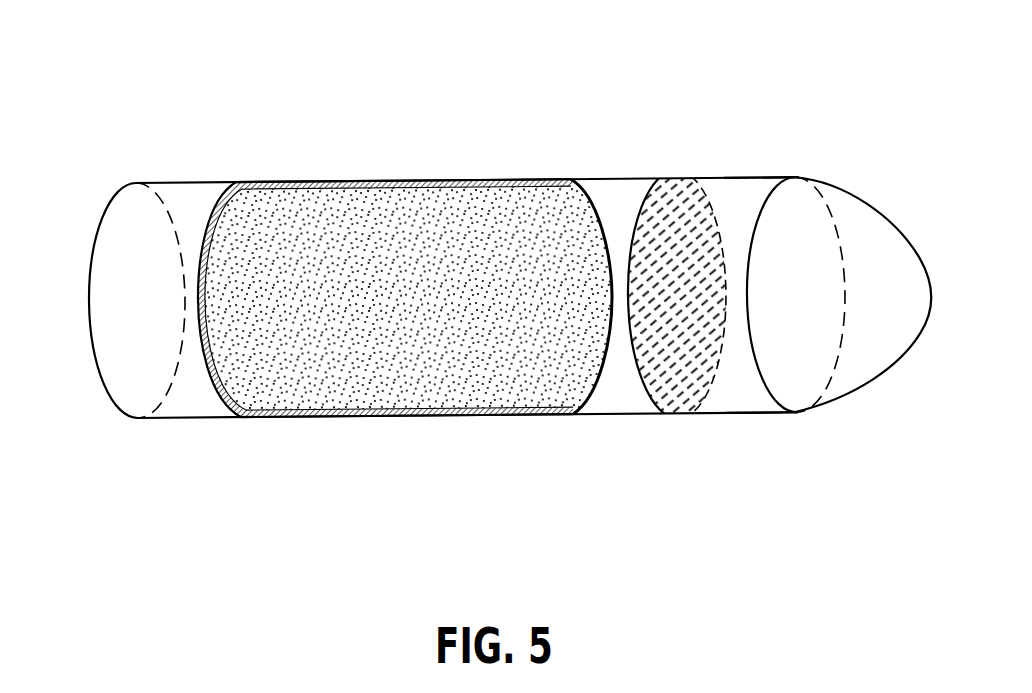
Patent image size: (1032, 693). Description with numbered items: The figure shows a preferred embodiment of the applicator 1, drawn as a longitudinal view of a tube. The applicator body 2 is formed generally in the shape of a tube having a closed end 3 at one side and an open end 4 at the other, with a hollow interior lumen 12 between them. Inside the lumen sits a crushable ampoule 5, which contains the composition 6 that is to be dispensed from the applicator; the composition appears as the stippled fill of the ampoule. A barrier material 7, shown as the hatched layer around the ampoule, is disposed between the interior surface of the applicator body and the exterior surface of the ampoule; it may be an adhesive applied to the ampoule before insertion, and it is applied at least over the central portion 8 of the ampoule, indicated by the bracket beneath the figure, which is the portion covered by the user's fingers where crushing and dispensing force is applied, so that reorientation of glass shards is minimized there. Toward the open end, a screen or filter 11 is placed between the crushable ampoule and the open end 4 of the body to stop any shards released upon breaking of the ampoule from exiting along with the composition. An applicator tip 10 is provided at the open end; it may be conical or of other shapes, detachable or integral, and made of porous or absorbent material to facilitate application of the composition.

The applicator 1 is at (488, 282).
The applicator body 2 is at (190, 398).
The closed end 3 is at (93, 356).
The open end 4 is at (758, 371).
The crushable ampoule 5 is at (472, 380).
The composition 6 is at (408, 298).
The barrier material 7 is at (362, 417).
The central portion 8 is at (405, 358).
The applicator tip 10 is at (867, 369).
The screen or filter 11 is at (652, 388).
The hollow interior lumen 12 is at (737, 395).